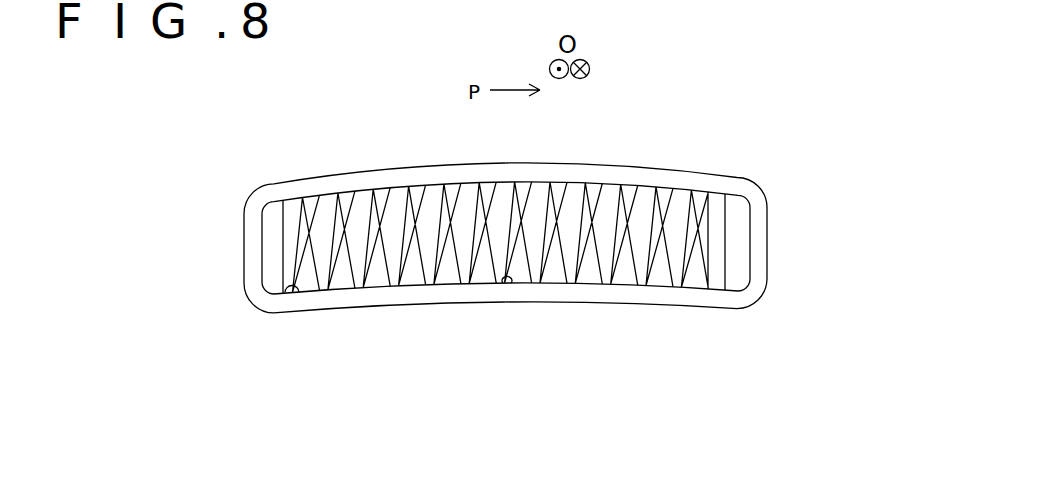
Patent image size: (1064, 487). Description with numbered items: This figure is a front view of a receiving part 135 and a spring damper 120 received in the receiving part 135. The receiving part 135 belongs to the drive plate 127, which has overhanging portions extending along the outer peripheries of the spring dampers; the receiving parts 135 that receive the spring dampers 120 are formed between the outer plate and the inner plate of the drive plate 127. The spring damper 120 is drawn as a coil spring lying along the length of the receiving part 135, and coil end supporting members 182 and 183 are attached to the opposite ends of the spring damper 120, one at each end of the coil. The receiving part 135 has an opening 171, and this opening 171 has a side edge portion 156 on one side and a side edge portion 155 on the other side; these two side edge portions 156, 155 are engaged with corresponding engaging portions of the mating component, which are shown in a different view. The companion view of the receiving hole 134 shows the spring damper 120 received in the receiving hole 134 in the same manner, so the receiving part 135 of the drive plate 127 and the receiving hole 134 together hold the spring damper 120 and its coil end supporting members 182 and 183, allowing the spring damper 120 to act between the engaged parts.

The spring damper 120 is at (507, 192).
The drive plate 127 is at (731, 236).
The receiving hole 134 is at (516, 318).
The receiving part 135 is at (507, 283).
The side edge portion 155 is at (262, 250).
The side edge portion 156 is at (750, 242).
The opening 171 is at (583, 188).
The coil end supporting member 182 is at (735, 212).
The coil end supporting member 183 is at (274, 215).